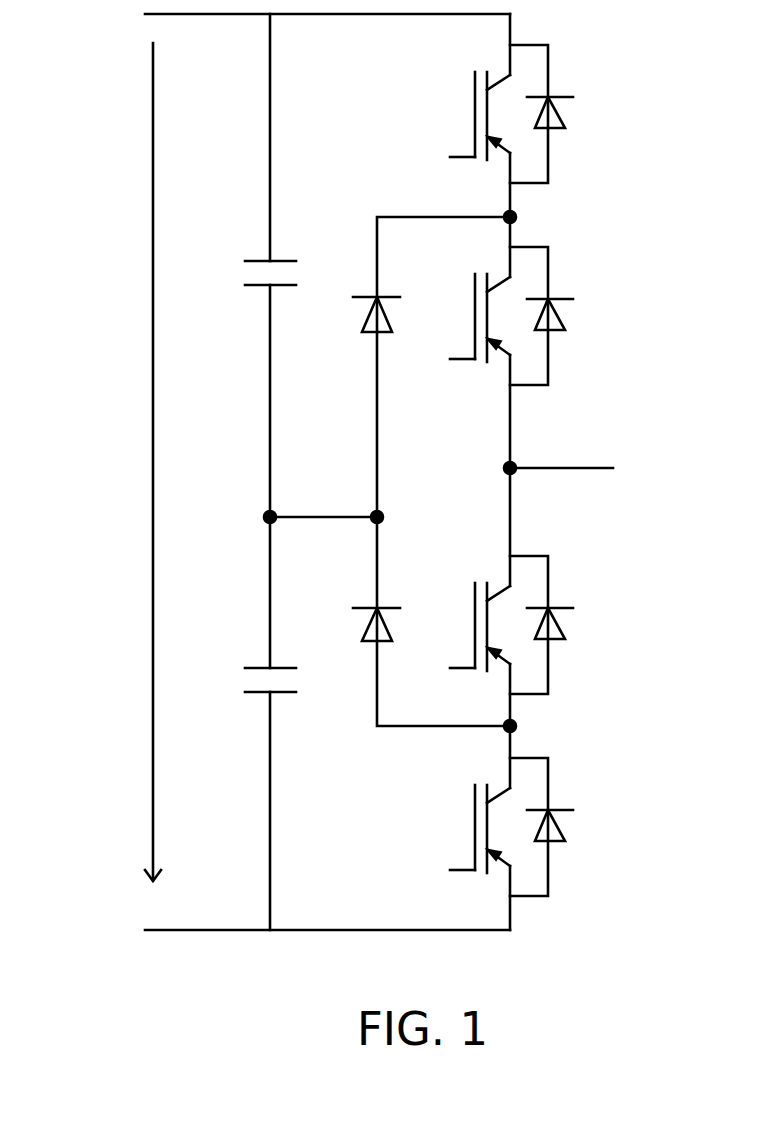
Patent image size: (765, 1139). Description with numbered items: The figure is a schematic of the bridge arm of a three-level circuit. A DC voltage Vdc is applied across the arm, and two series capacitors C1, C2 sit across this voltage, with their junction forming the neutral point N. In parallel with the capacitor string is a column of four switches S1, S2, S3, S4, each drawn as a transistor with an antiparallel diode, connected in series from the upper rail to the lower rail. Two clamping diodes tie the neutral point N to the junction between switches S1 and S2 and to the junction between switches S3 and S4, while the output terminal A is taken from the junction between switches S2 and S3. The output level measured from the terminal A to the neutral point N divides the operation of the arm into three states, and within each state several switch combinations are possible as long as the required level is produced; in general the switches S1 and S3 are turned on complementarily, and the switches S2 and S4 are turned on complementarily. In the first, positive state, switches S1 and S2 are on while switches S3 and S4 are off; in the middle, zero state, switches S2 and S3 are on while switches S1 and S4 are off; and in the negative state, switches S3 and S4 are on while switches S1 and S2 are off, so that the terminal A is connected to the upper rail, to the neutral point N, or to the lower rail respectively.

The switch S1 is at (545, 114).
The switch S2 is at (545, 316).
The switch S3 is at (545, 625).
The switch S4 is at (545, 827).
The capacitor C1 is at (241, 265).
The capacitor C2 is at (242, 723).
The neutral point N is at (323, 494).
The output terminal A is at (558, 448).
The DC voltage Vdc is at (108, 462).